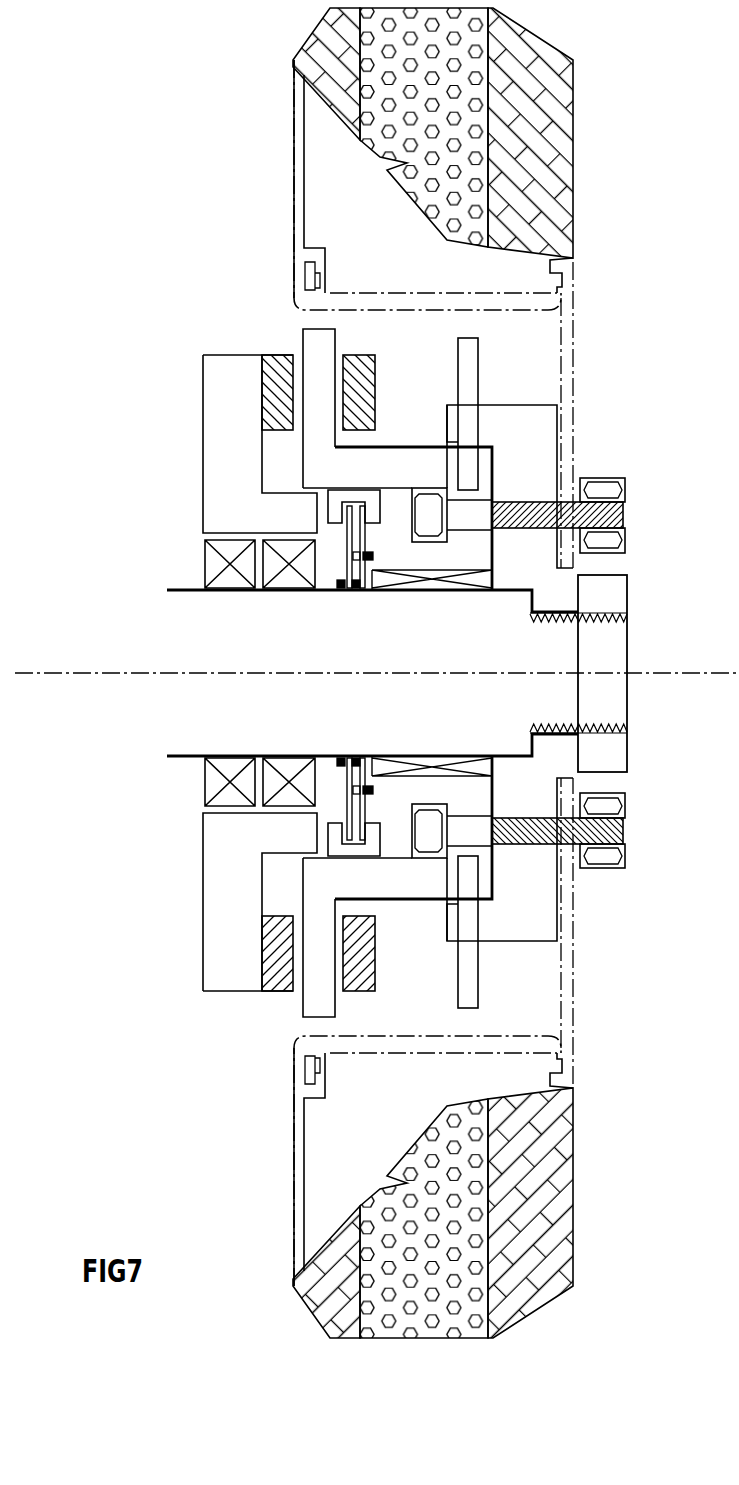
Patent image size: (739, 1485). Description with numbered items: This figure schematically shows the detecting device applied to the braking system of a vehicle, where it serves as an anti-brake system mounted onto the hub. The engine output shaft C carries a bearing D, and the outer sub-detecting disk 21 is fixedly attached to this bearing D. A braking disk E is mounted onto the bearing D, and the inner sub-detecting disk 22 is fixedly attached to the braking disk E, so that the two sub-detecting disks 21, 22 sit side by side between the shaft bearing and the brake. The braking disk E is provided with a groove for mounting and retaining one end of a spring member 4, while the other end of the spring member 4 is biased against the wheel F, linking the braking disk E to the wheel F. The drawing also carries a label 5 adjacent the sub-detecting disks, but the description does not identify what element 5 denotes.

The spring member 4 is at (470, 378).
The brush holder 5 is at (332, 500).
The outer sub-detecting disk 21 is at (343, 543).
The inner sub-detecting disk 22 is at (367, 507).
The output shaft C is at (605, 645).
The bearing D is at (375, 582).
The braking disk E is at (467, 550).
The wheel F is at (540, 445).